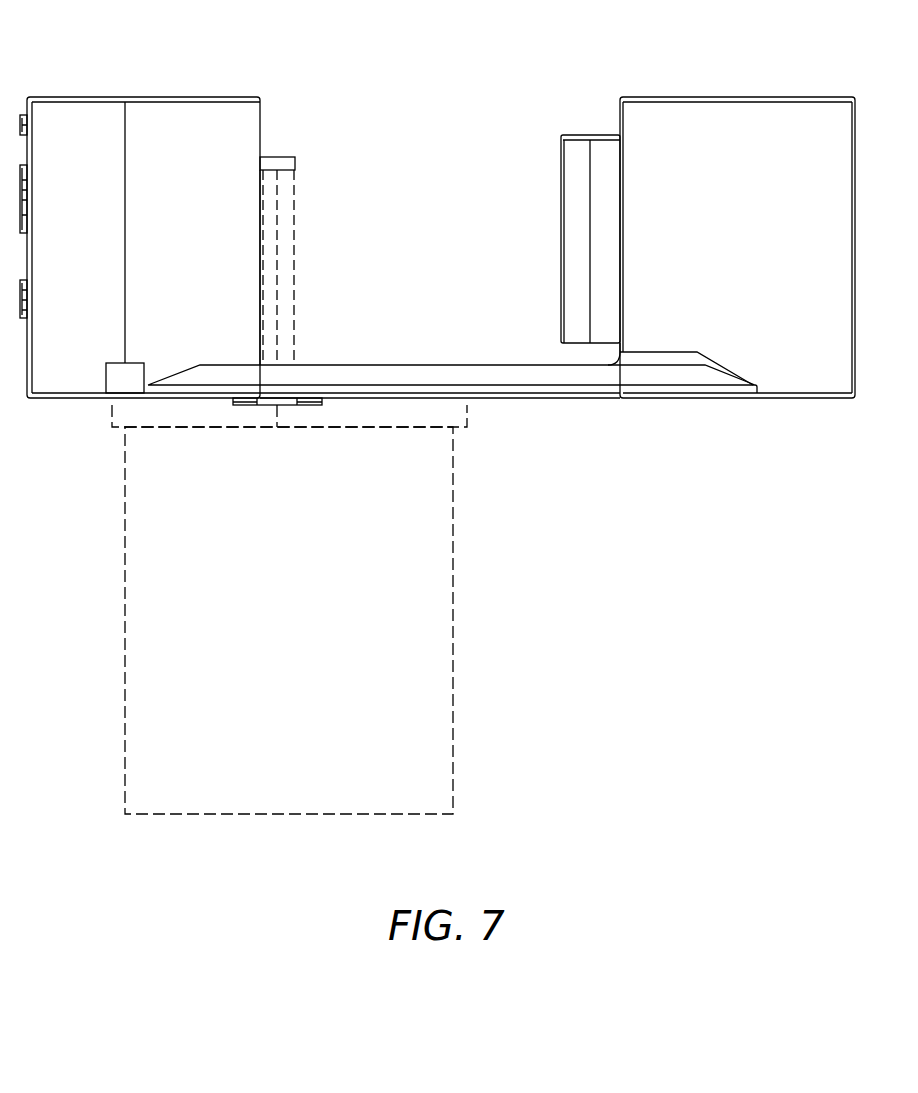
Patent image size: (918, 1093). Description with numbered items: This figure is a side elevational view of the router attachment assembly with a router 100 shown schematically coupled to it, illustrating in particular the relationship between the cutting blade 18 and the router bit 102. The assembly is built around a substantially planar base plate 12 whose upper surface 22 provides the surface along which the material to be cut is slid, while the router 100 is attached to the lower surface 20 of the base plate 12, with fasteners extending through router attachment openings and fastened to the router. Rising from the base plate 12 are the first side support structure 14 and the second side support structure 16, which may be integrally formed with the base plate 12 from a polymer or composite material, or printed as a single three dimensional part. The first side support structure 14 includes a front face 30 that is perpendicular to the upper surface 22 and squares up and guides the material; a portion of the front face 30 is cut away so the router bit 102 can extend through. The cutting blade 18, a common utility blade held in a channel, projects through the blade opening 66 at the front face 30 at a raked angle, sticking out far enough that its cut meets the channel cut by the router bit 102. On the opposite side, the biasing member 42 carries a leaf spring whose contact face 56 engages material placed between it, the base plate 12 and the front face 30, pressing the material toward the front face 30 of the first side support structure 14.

The base plate 12 is at (638, 417).
The first side support structure 14 is at (185, 72).
The second side support structure 16 is at (735, 67).
The cutting blade 18 is at (323, 222).
The lower surface 20 is at (563, 417).
The upper surface 22 is at (493, 339).
The front face 30 is at (260, 303).
The biasing member 42 is at (547, 239).
The contact face 56 is at (536, 239).
The blade opening 66 is at (262, 153).
The router 100 is at (474, 602).
The router bit 102 is at (314, 226).